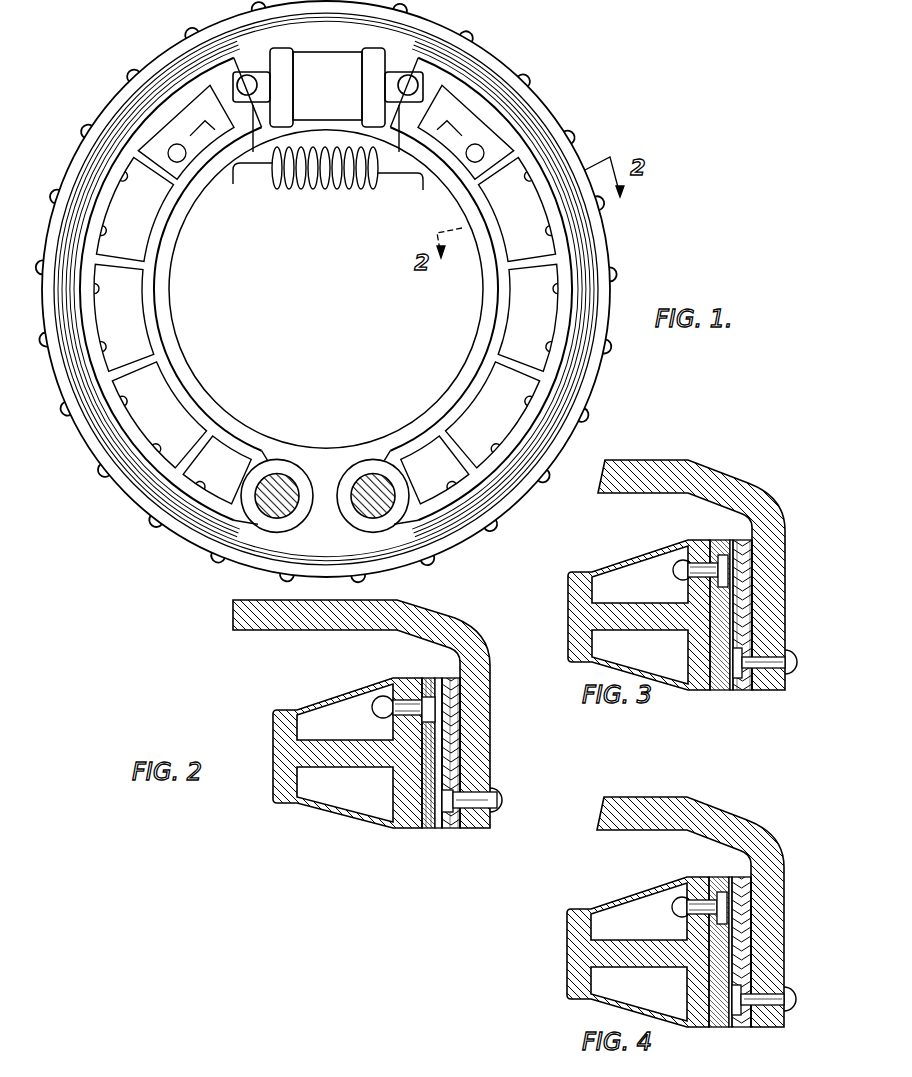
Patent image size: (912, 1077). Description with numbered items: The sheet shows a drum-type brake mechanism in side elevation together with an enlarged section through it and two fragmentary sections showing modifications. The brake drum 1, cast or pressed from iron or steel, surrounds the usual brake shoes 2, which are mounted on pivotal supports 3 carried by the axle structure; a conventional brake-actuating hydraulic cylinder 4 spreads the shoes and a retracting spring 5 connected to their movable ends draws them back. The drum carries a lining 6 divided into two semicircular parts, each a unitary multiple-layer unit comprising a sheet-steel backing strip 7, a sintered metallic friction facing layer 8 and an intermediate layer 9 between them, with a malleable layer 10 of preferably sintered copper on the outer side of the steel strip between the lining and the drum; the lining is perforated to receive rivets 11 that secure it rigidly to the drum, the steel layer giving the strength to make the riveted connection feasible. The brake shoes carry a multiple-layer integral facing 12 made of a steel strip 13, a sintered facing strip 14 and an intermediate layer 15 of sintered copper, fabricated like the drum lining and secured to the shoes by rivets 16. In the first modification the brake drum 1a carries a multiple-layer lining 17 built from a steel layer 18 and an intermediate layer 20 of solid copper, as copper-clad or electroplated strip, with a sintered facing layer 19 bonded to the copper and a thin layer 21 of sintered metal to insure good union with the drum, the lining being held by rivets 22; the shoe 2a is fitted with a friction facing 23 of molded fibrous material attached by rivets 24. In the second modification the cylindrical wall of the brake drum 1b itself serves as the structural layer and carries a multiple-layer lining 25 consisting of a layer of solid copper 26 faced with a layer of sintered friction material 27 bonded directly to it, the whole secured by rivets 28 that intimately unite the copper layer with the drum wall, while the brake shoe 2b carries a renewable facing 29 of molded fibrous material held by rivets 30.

In FIG. 1, the brake drum 1 is at (545, 103).
In FIG. 2, the brake drum 1 is at (236, 626).
In FIG. 1, the brake shoes 2 is at (150, 313).
In FIG. 2, the brake shoes 2 is at (320, 708).
In FIG. 1, the pivotal supports 3 is at (272, 478).
In FIG. 1, the brake-actuating hydraulic cylinder 4 is at (328, 87).
In FIG. 1, the retracting spring 5 is at (327, 192).
In FIG. 1, the lining 6 is at (178, 68).
In FIG. 2, the lining 6 is at (450, 680).
In FIG. 1, the multiple-layer integral facing 12 is at (186, 80).
In FIG. 2, the multiple-layer integral facing 12 is at (428, 678).
In FIG. 2, the backing strip 7 is at (458, 829).
In FIG. 2, the friction facing layer 8 is at (441, 829).
In FIG. 2, the intermediate layer 9 is at (450, 829).
In FIG. 2, the malleable layer 10 is at (463, 753).
In FIG. 2, the rivets 11 is at (502, 801).
In FIG. 2, the steel strip 13 is at (420, 829).
In FIG. 2, the facing strip 14 is at (431, 829).
In FIG. 2, the intermediate layer 15 is at (426, 829).
In FIG. 2, the rivets 16 is at (377, 708).
In FIG. 3, the brake drum 1a is at (725, 482).
In FIG. 3, the shoe 2a is at (606, 570).
In FIG. 3, the multiple-layer lining 17 is at (745, 540).
In FIG. 3, the steel layer 18 is at (750, 692).
In FIG. 3, the facing layer 19 is at (725, 692).
In FIG. 3, the intermediate layer 20 is at (737, 692).
In FIG. 3, the thin layer 21 is at (753, 608).
In FIG. 3, the rivets 22 is at (792, 666).
In FIG. 3, the friction facing 23 is at (722, 540).
In FIG. 3, the rivets 24 is at (676, 571).
In FIG. 4, the brake drum 1b is at (727, 822).
In FIG. 4, the brake shoe 2b is at (608, 905).
In FIG. 4, the multiple-layer lining 25 is at (745, 868).
In FIG. 4, the layer of solid copper 26 is at (749, 1029).
In FIG. 4, the layer of sintered friction material 27 is at (735, 1029).
In FIG. 4, the rivets 28 is at (786, 992).
In FIG. 4, the renewable facing 29 is at (720, 876).
In FIG. 4, the rivets 30 is at (675, 910).